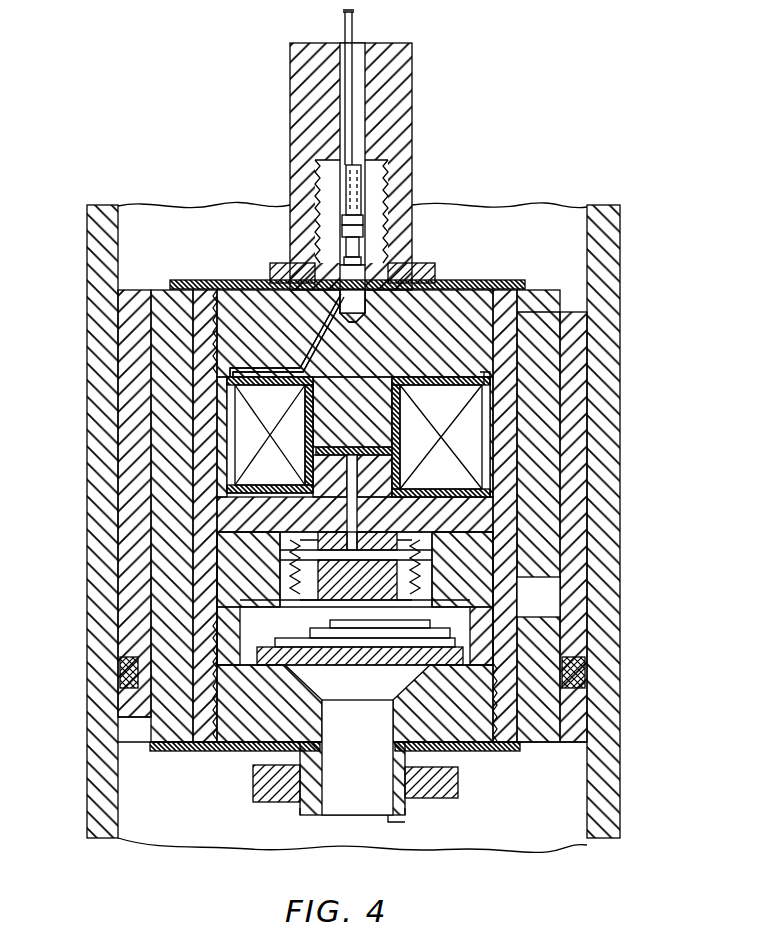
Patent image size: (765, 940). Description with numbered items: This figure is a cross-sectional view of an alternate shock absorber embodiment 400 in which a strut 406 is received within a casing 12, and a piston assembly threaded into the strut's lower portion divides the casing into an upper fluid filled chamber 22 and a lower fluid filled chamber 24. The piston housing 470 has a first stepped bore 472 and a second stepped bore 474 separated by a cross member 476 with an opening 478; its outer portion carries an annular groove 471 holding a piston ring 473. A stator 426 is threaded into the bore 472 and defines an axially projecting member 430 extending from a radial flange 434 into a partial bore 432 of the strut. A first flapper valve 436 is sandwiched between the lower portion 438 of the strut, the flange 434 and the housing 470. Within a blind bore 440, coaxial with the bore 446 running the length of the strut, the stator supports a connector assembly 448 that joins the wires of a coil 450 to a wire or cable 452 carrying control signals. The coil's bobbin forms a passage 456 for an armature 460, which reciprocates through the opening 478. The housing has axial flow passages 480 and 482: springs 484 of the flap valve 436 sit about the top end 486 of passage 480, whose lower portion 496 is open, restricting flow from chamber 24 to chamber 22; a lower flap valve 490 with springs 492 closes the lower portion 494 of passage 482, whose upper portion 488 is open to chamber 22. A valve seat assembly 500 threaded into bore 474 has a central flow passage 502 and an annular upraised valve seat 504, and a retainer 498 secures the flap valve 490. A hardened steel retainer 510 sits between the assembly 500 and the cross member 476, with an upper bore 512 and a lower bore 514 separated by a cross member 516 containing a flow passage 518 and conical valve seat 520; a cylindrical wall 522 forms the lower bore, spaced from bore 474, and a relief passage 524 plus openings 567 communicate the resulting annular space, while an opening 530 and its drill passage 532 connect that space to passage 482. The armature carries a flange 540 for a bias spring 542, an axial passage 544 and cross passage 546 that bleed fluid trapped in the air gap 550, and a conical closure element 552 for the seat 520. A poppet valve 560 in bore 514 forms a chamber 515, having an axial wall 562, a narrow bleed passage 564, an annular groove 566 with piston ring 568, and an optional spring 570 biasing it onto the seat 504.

The casing 12 is at (606, 302).
The upper fluid filled chamber 22 is at (200, 100).
The lower fluid filled chamber 24 is at (168, 875).
The valve assembly 400 is at (160, 167).
The strut 406 is at (412, 50).
The stator 426 is at (480, 277).
The axially projecting member 430 is at (382, 170).
The partial bore 432 is at (388, 150).
The radial flange 434 is at (258, 282).
The first flapper valve 436 is at (494, 277).
The lower portion of the strut 438 is at (412, 266).
The blind bore 440 is at (364, 303).
The bore 446 is at (363, 45).
The connector assembly 448 is at (349, 184).
The coil 450 is at (412, 397).
The wire or cable 452 is at (354, 13).
The passage 456 is at (392, 470).
The armature 460 is at (377, 437).
The piston housing 470 is at (576, 381).
The annular groove 471 is at (594, 667).
The first stepped bore 472 is at (220, 433).
The piston ring 473 is at (576, 680).
The second stepped bore 474 is at (220, 602).
The cross member 476 is at (245, 508).
The opening 478 is at (395, 515).
The axial flow passage 480 is at (165, 345).
The axial flow passage 482 is at (548, 356).
The springs 484 is at (515, 287).
The top end 486 is at (182, 282).
The upper portion 488 is at (562, 318).
The flap valve 490 is at (520, 761).
The springs 492 is at (488, 761).
The lower portion 494 is at (565, 725).
The portion of passage 496 is at (178, 751).
The retainer 498 is at (425, 800).
The valve seat assembly 500 is at (235, 752).
The central bore or flow passage 502 is at (378, 815).
The annular upraised valve seat 504 is at (427, 692).
The retainer 510 is at (500, 531).
The upper bore 512 is at (286, 556).
The lower bore 514 is at (300, 630).
The chamber 515 is at (461, 624).
The cross member 516 is at (405, 602).
The flow passage 518 is at (355, 602).
The valve seat 520 is at (382, 630).
The cylindrical axially extending wall 522 is at (222, 660).
The relief passage 524 is at (494, 601).
The opening 530 is at (503, 576).
The passage 532 is at (556, 588).
The flange 540 is at (300, 585).
The bias spring 542 is at (430, 556).
The axially directed passage 544 is at (352, 530).
The cross passage 546 is at (356, 566).
The air gap 550 is at (271, 435).
The closure element 552 is at (428, 580).
The poppet valve 560 is at (404, 698).
The axial wall 562 is at (495, 633).
The bleed passage 564 is at (384, 666).
The annular groove 566 is at (232, 641).
The openings 567 is at (263, 676).
The piston ring 568 is at (240, 649).
The spring 570 is at (257, 713).